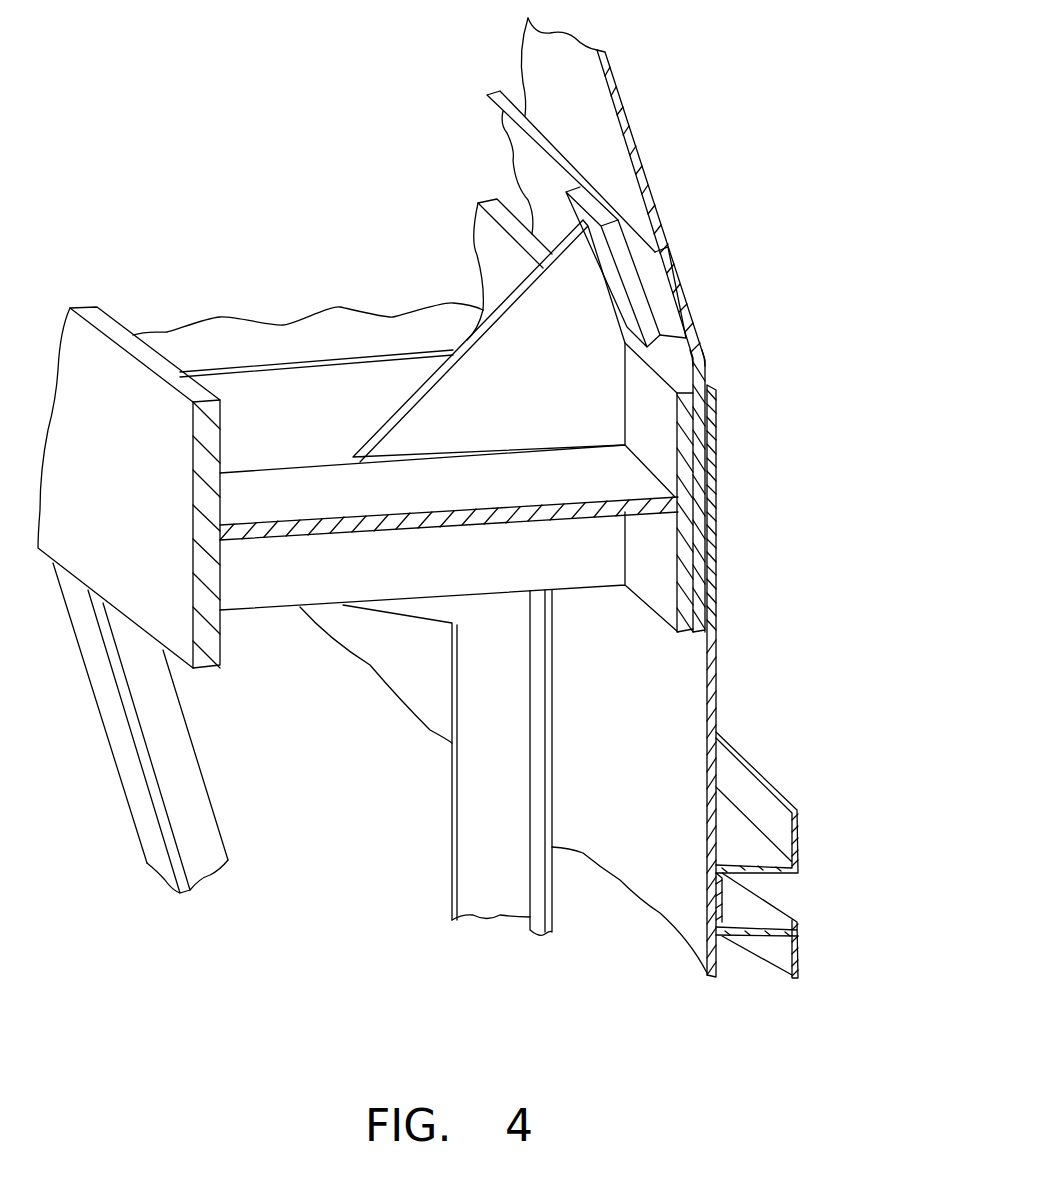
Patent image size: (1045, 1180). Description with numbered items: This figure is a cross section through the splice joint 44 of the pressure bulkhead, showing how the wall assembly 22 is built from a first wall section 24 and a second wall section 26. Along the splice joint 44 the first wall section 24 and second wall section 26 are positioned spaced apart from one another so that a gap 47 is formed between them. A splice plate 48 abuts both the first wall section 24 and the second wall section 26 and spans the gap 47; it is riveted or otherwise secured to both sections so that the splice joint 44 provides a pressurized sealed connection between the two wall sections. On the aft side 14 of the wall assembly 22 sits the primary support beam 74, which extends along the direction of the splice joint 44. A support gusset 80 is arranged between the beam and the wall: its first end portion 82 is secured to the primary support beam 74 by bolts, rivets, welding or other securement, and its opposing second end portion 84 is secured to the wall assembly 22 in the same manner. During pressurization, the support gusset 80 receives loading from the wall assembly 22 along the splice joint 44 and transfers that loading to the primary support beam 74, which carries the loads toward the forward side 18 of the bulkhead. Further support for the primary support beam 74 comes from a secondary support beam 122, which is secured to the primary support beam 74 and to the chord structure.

The aft side 14 is at (345, 166).
The forward side 18 is at (860, 209).
The wall assembly 22 is at (505, 62).
The first wall section 24 is at (716, 683).
The second wall section 26 is at (620, 100).
The splice joint 44 is at (794, 408).
The gap 47 is at (714, 368).
The splice plate 48 is at (680, 291).
The primary support beam 74 is at (145, 487).
The support gusset 80 is at (457, 337).
The first end portion 82 is at (445, 408).
The second end portion 84 is at (635, 293).
The secondary support beam 122 is at (498, 828).